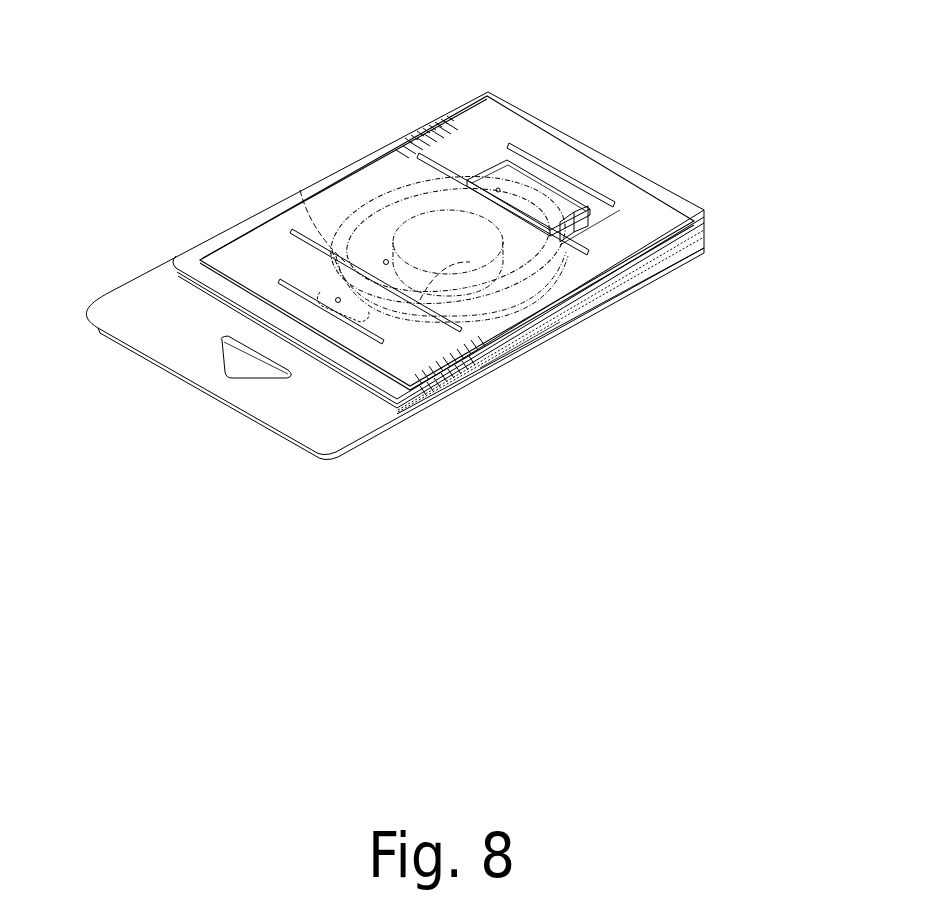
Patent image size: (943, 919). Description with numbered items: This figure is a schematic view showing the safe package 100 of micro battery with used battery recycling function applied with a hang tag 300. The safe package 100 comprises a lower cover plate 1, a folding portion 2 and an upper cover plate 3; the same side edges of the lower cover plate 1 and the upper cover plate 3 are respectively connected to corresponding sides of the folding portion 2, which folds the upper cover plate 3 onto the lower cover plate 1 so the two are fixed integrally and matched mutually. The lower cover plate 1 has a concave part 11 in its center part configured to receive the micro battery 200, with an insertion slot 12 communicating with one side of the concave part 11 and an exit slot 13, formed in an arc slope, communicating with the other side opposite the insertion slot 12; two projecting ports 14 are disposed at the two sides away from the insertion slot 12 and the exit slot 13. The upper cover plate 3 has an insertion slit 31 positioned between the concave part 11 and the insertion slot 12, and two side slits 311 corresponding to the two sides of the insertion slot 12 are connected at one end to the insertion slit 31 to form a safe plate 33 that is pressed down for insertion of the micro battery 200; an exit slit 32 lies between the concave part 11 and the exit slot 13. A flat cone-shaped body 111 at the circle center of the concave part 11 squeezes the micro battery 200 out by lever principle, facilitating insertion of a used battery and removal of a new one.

The safe package 100 is at (325, 100).
The hang tag 300 is at (150, 290).
The micro battery 200 is at (540, 343).
The lower cover plate 1 is at (692, 244).
The folding portion 2 is at (701, 210).
The upper cover plate 3 is at (702, 228).
The concave part 11 is at (368, 206).
The flat cone-shaped body 111 is at (518, 363).
The insertion slot 12 is at (498, 185).
The exit slot 13 is at (325, 262).
The projecting ports 14 is at (285, 282).
The insertion slit 31 is at (580, 240).
The side slits 311 is at (485, 112).
The exit slit 32 is at (335, 250).
The safe plate 33 is at (576, 212).